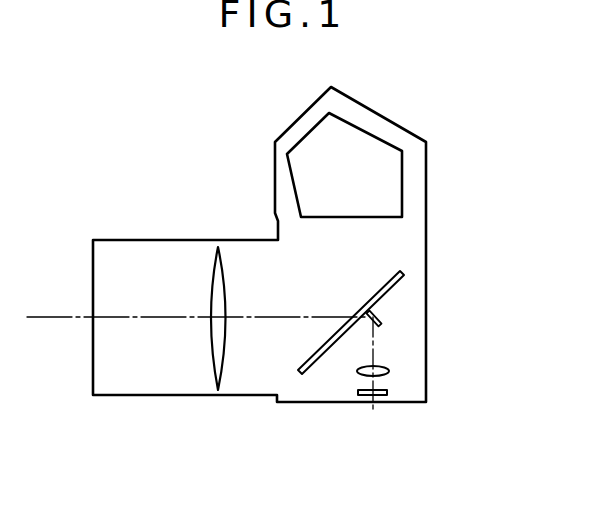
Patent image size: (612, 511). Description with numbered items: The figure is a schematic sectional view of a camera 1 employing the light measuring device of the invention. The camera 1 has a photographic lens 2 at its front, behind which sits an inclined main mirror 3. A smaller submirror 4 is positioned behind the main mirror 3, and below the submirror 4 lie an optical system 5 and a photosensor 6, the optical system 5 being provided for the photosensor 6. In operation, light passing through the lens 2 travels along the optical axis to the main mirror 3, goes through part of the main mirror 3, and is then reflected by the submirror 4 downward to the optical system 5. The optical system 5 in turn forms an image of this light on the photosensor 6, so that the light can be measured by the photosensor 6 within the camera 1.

The camera 1 is at (417, 199).
The photographic lens 2 is at (215, 270).
The main mirror 3 is at (397, 284).
The submirror 4 is at (382, 318).
The optical system 5 is at (389, 371).
The photosensor 6 is at (383, 402).